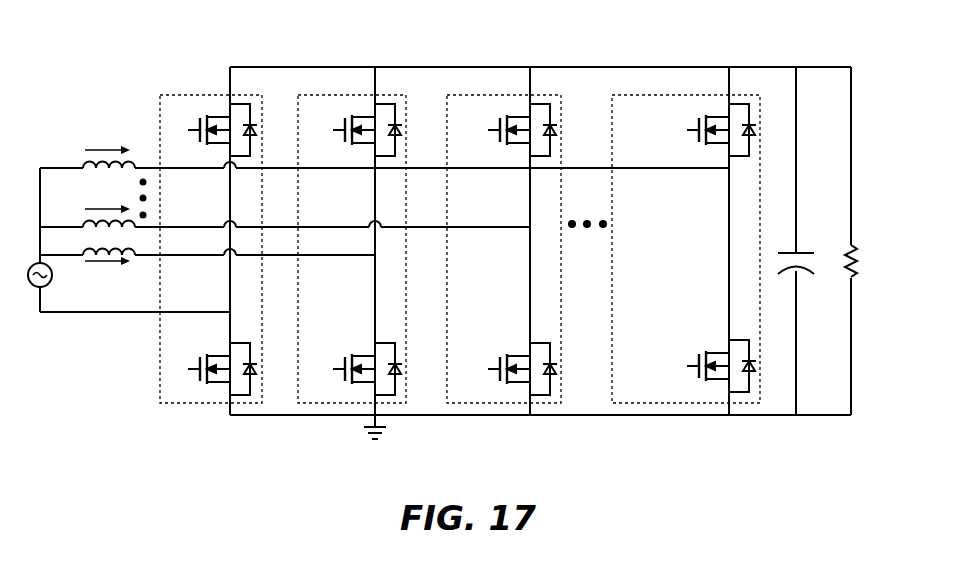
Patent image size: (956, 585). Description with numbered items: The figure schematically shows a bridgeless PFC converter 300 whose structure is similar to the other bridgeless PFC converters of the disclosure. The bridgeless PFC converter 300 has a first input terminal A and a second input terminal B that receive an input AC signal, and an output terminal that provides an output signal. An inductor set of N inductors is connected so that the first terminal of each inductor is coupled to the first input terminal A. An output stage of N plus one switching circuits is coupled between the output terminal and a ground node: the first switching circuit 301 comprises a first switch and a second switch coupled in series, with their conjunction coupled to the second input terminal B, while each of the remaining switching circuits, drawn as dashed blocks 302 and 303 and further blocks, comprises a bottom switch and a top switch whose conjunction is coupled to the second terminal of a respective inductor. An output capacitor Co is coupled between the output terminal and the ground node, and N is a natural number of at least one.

The bridgeless PFC converter 300 is at (117, 85).
The first switching circuit 301 is at (158, 385).
The second switching leg with switches S3 and S4 302 is at (313, 408).
The third switching leg with switches S5 and S6 303 is at (477, 408).